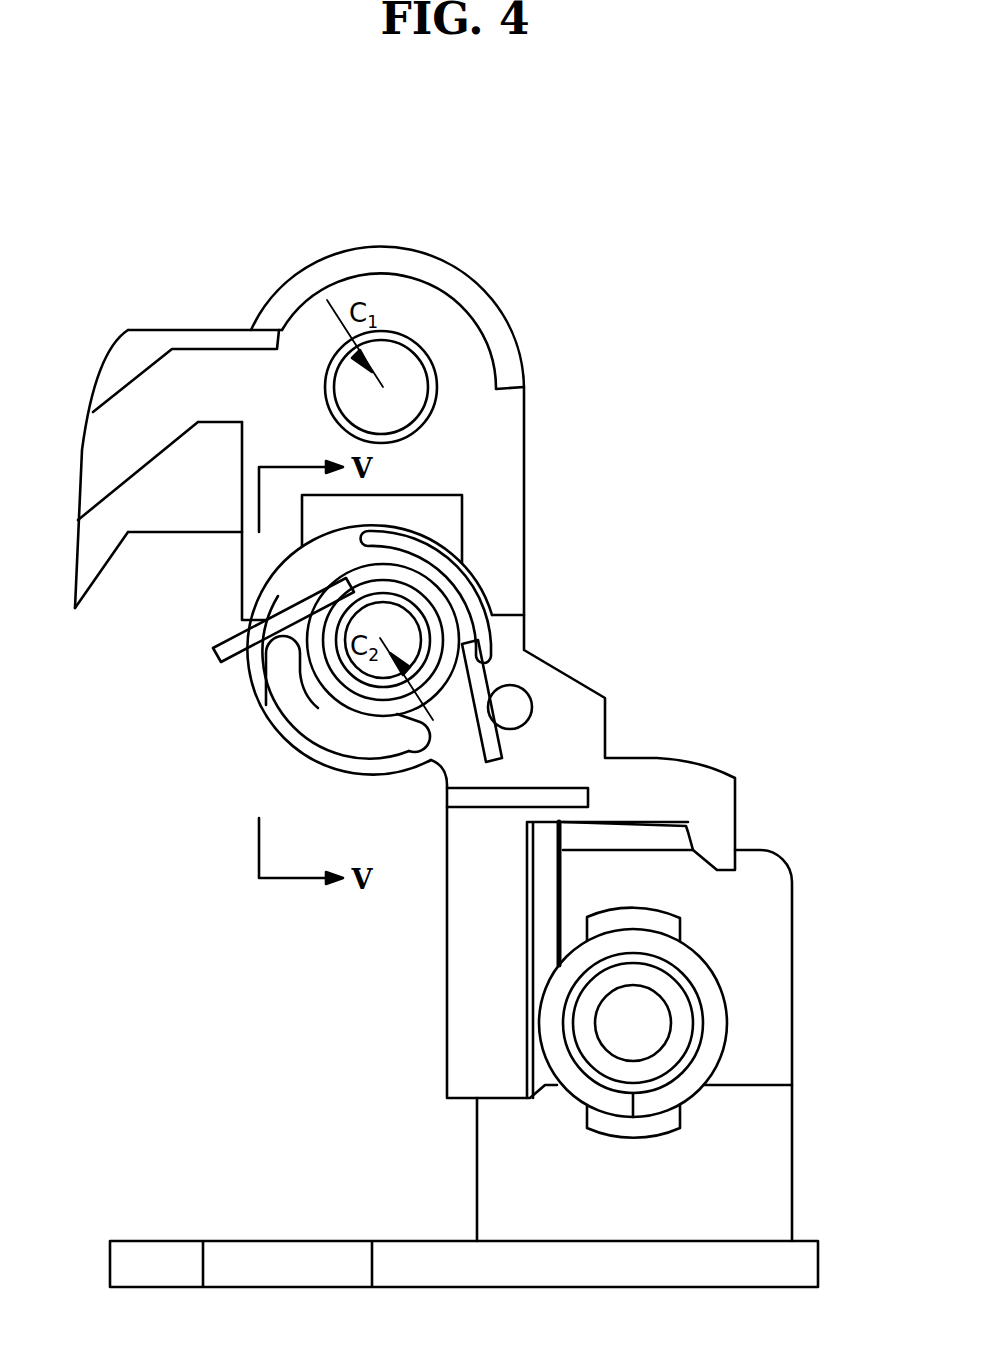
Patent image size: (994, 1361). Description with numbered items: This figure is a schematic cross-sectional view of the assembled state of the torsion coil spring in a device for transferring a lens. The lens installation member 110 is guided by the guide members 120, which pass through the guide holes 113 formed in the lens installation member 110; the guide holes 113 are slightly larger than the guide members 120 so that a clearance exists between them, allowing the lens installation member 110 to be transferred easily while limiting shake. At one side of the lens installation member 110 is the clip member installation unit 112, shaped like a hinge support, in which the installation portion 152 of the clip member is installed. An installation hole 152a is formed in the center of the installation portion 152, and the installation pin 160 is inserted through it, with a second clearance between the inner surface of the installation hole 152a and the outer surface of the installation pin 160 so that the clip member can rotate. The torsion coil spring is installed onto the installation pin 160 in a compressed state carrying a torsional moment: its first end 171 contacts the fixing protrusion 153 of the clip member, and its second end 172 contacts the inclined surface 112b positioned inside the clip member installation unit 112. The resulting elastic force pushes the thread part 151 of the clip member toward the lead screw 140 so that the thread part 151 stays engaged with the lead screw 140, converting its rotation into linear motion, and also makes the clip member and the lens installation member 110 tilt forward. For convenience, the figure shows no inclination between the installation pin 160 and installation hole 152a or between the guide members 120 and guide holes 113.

The lens installation member 110 is at (447, 248).
The guide members 120 is at (405, 373).
The guide holes 113 is at (437, 407).
The clip member installation unit 112 is at (252, 553).
The inclined surface 112b is at (242, 618).
The installation pin 160 is at (397, 627).
The installation portion 152 is at (310, 715).
The installation hole 152a is at (393, 627).
The fixing protrusion 153 is at (515, 697).
The first end 171 is at (492, 748).
The second end 172 is at (217, 657).
The thread part 151 is at (543, 946).
The lead screw 140 is at (717, 1020).